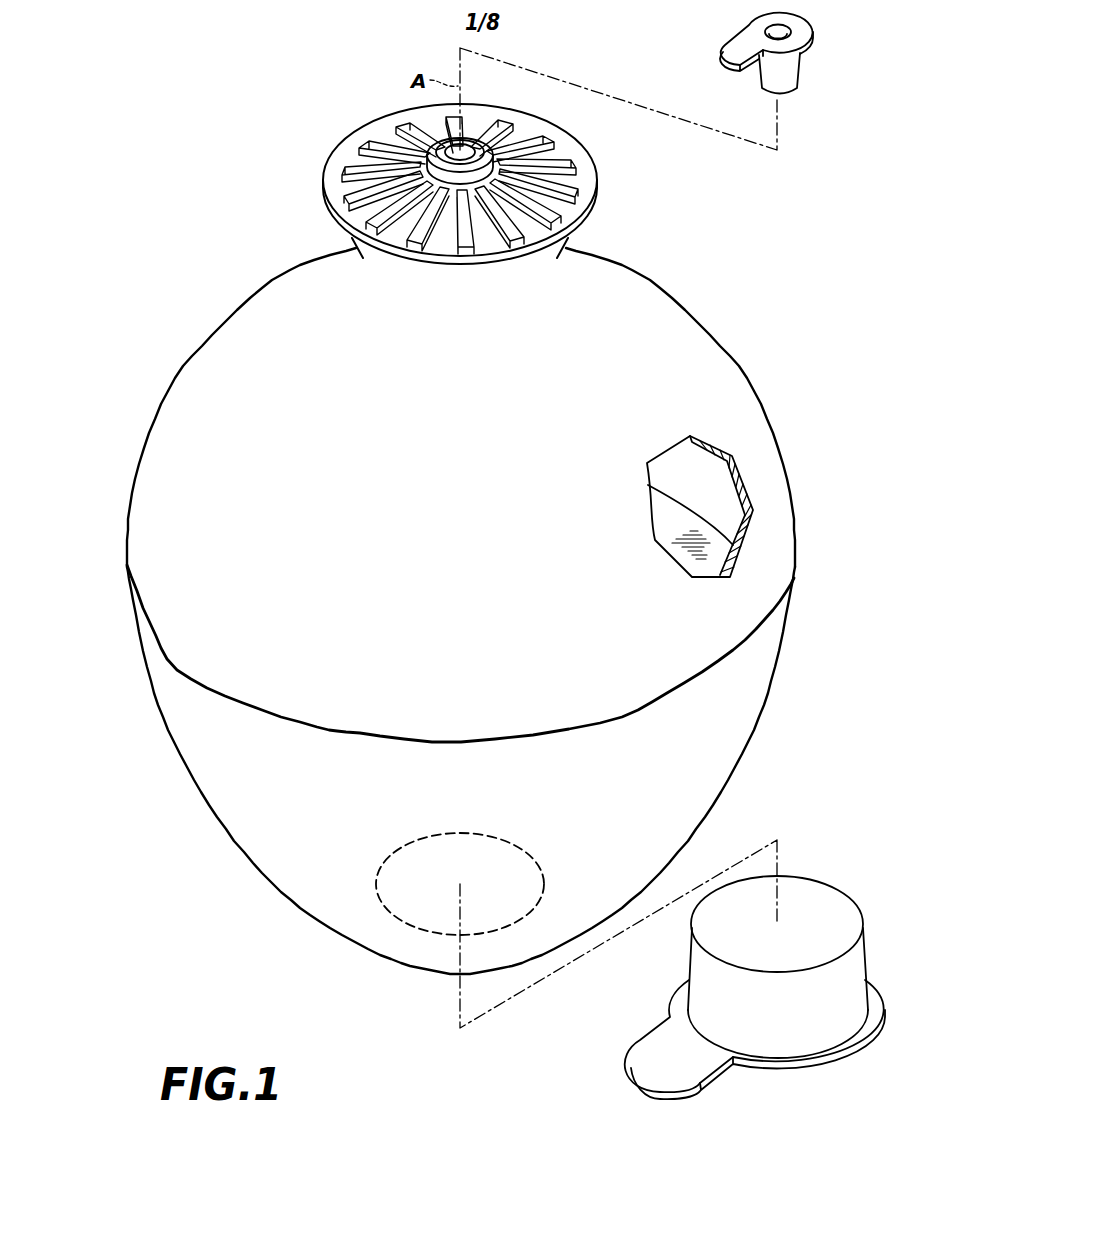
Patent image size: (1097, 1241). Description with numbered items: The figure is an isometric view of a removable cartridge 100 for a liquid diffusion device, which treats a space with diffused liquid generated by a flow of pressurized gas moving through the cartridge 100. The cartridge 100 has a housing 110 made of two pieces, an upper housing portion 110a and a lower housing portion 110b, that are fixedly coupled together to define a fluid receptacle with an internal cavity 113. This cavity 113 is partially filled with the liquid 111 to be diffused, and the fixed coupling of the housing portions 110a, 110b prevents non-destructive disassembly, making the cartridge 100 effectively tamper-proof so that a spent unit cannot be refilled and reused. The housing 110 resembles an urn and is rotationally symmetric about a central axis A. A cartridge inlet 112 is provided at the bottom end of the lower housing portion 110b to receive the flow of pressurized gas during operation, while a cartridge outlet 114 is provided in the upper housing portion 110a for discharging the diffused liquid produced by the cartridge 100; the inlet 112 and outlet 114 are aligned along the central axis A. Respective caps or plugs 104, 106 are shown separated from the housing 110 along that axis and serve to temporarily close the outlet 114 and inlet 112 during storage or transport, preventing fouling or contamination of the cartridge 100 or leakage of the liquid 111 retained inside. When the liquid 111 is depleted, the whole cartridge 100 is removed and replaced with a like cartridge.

The removable cartridge 100 is at (680, 200).
The cap or plug 104 is at (790, 70).
The cap or plug 106 is at (703, 995).
The housing 110 is at (481, 611).
The upper housing portion 110a is at (732, 418).
The lower housing portion 110b is at (723, 725).
The liquid 111 is at (700, 538).
The cartridge inlet 112 is at (418, 987).
The internal cavity 113 is at (700, 476).
The cartridge outlet 114 is at (465, 148).